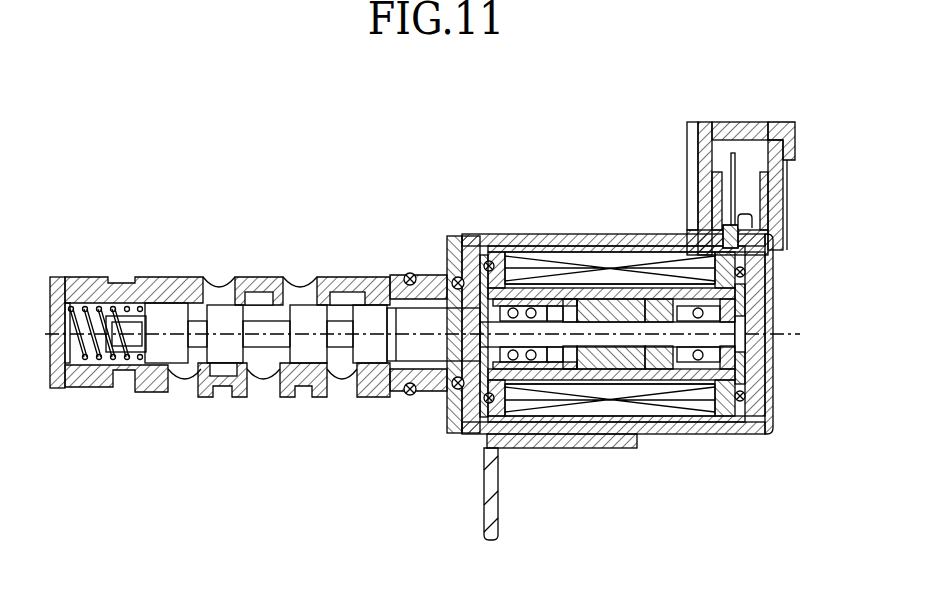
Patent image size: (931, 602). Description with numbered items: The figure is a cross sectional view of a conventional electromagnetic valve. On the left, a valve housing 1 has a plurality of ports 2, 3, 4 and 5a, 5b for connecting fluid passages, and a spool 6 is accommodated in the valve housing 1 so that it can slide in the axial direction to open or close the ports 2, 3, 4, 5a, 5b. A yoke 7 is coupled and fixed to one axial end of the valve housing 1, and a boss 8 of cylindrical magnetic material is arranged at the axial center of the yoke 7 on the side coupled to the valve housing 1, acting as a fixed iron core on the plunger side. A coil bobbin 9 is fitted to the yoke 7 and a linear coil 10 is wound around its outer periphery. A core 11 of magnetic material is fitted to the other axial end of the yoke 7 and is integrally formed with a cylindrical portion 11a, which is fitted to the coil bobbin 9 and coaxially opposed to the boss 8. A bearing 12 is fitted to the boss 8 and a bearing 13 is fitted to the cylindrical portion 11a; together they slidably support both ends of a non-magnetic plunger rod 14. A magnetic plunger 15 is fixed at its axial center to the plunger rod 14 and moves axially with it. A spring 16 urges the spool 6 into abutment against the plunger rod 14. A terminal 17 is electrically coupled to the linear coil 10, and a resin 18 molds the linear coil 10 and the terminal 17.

The valve housing 1 is at (170, 269).
The port 2 is at (261, 395).
The port 3 is at (218, 272).
The port 4 is at (297, 272).
The port 5a is at (178, 390).
The port 5b is at (340, 390).
The spool 6 is at (345, 305).
The yoke 7 is at (496, 228).
The boss 8 is at (519, 262).
The coil bobbin 9 is at (562, 262).
The linear coil 10 is at (588, 262).
The core 11 is at (750, 365).
The cylindrical portion 11a is at (650, 262).
The bearing 12 is at (550, 385).
The bearing 13 is at (710, 365).
The plunger rod 14 is at (585, 345).
The plunger 15 is at (637, 370).
The spring 16 is at (80, 388).
The terminal 17 is at (734, 155).
The resin 18 is at (700, 157).